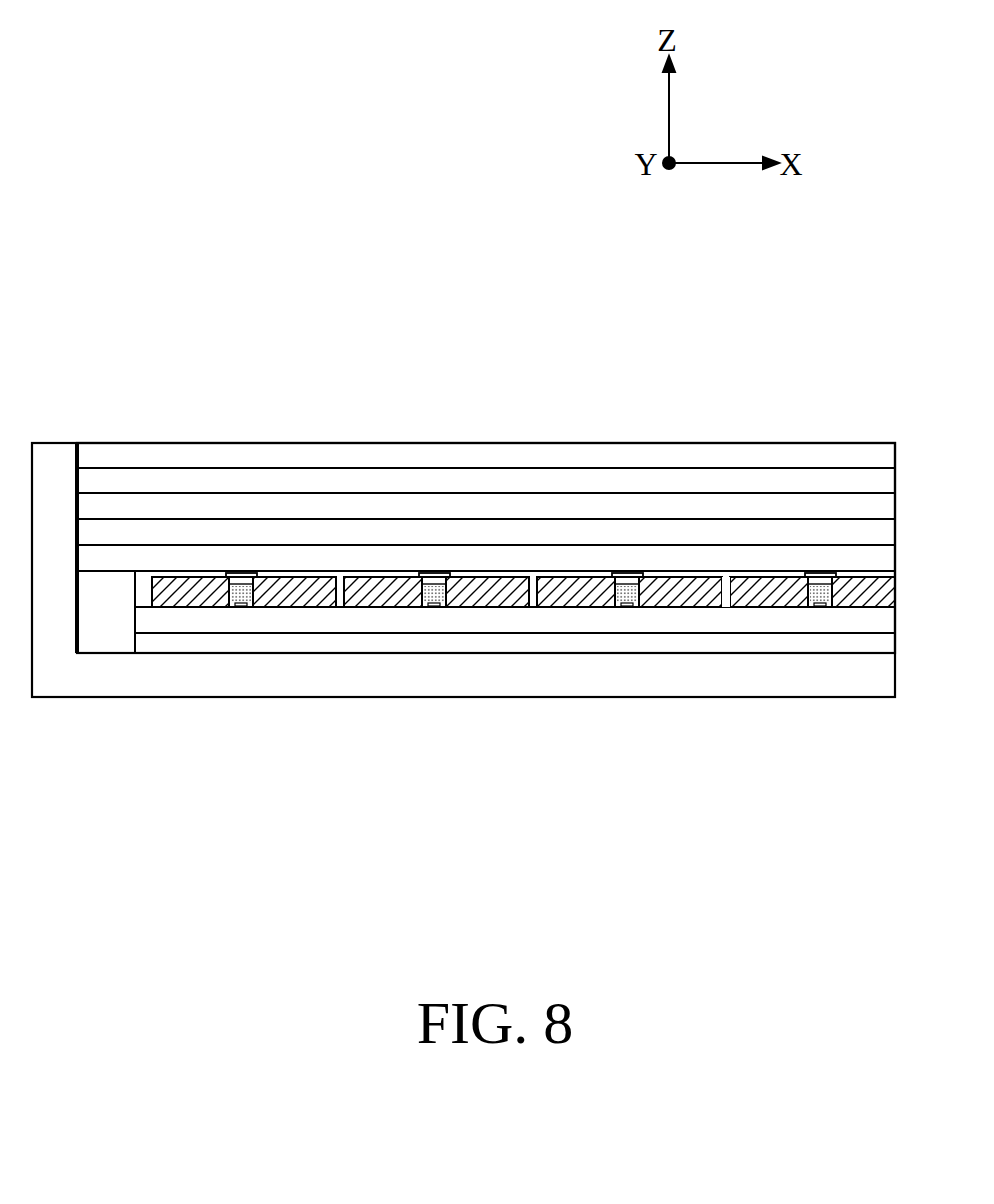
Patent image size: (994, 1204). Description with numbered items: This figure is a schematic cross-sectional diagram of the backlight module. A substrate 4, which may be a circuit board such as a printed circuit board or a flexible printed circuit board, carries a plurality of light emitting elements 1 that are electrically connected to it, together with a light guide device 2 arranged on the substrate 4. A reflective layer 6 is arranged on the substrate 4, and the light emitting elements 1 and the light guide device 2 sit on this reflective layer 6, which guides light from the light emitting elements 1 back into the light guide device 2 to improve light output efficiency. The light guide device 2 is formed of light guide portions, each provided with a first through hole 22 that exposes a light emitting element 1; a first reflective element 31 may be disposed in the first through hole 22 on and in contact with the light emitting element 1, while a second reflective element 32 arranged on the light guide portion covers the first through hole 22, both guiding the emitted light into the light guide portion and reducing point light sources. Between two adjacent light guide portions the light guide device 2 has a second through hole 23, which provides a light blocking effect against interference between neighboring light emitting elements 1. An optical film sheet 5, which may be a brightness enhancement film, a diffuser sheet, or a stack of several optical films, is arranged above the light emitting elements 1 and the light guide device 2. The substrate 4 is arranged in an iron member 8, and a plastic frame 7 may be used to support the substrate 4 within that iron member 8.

The light emitting element 1 is at (818, 607).
The light guide device 2 is at (885, 583).
The substrate 4 is at (885, 642).
The optical film sheet 5 is at (907, 443).
The reflective layer 6 is at (883, 617).
The plastic frame 7 is at (108, 636).
The iron member 8 is at (58, 670).
The first through hole 22 is at (832, 607).
The second through hole 23 is at (723, 600).
The first reflective element 31 is at (803, 607).
The second reflective element 32 is at (818, 573).